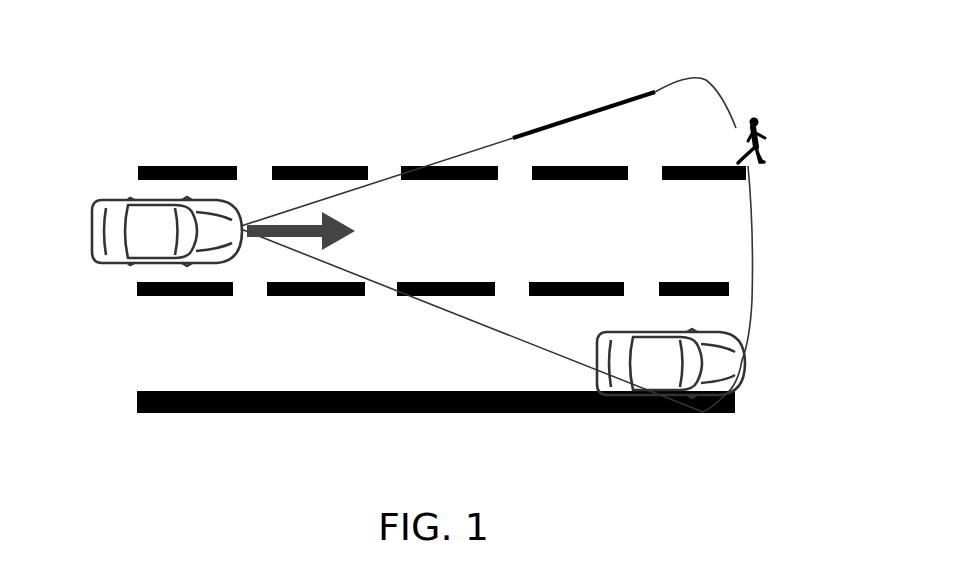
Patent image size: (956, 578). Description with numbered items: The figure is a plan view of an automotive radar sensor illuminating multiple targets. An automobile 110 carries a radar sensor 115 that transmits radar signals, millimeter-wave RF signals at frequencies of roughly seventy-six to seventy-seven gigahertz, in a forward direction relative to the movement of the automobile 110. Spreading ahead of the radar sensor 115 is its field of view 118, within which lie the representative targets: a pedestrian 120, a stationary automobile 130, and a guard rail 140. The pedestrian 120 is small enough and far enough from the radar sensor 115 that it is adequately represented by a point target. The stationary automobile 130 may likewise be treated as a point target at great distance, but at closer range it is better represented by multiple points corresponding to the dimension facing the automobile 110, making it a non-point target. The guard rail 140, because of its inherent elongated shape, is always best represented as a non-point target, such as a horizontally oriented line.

The automobile 110 is at (140, 199).
The radar sensor 115 is at (300, 184).
The field of view 118 is at (497, 223).
The pedestrian 120 is at (796, 120).
The stationary automobile 130 is at (711, 356).
The guard rail 140 is at (436, 440).